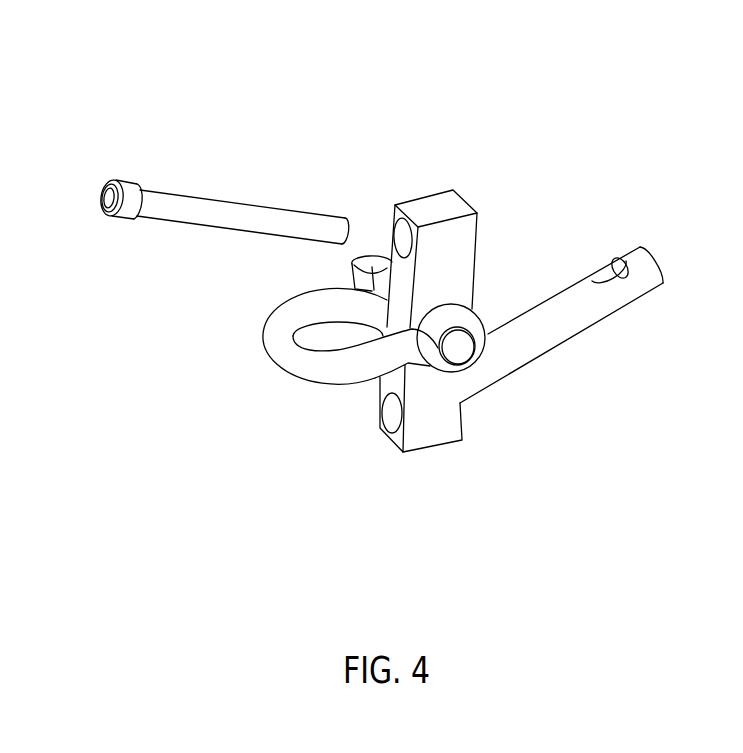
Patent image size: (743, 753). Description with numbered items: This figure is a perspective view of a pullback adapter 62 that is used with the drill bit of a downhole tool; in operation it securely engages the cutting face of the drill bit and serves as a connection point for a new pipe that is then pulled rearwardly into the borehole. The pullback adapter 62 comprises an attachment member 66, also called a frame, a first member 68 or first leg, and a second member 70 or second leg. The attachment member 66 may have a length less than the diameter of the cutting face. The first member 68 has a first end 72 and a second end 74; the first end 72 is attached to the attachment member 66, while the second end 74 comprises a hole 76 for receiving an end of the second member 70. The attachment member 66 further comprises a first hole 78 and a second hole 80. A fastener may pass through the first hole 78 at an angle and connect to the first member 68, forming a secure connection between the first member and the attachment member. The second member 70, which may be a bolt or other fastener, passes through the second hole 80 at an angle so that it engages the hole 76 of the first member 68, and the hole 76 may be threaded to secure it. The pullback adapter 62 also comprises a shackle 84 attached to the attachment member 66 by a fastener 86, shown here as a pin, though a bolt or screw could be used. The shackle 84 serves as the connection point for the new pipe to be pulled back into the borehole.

The pullback adapter 62 is at (498, 98).
The attachment member 66 is at (426, 225).
The first member 68 is at (601, 297).
The second member 70 is at (188, 215).
The first end 72 is at (460, 402).
The second end 74 is at (653, 273).
The hole 76 is at (622, 262).
The first hole 78 is at (392, 412).
The second hole 80 is at (400, 238).
The shackle 84 is at (282, 349).
The fastener 86 is at (357, 275).